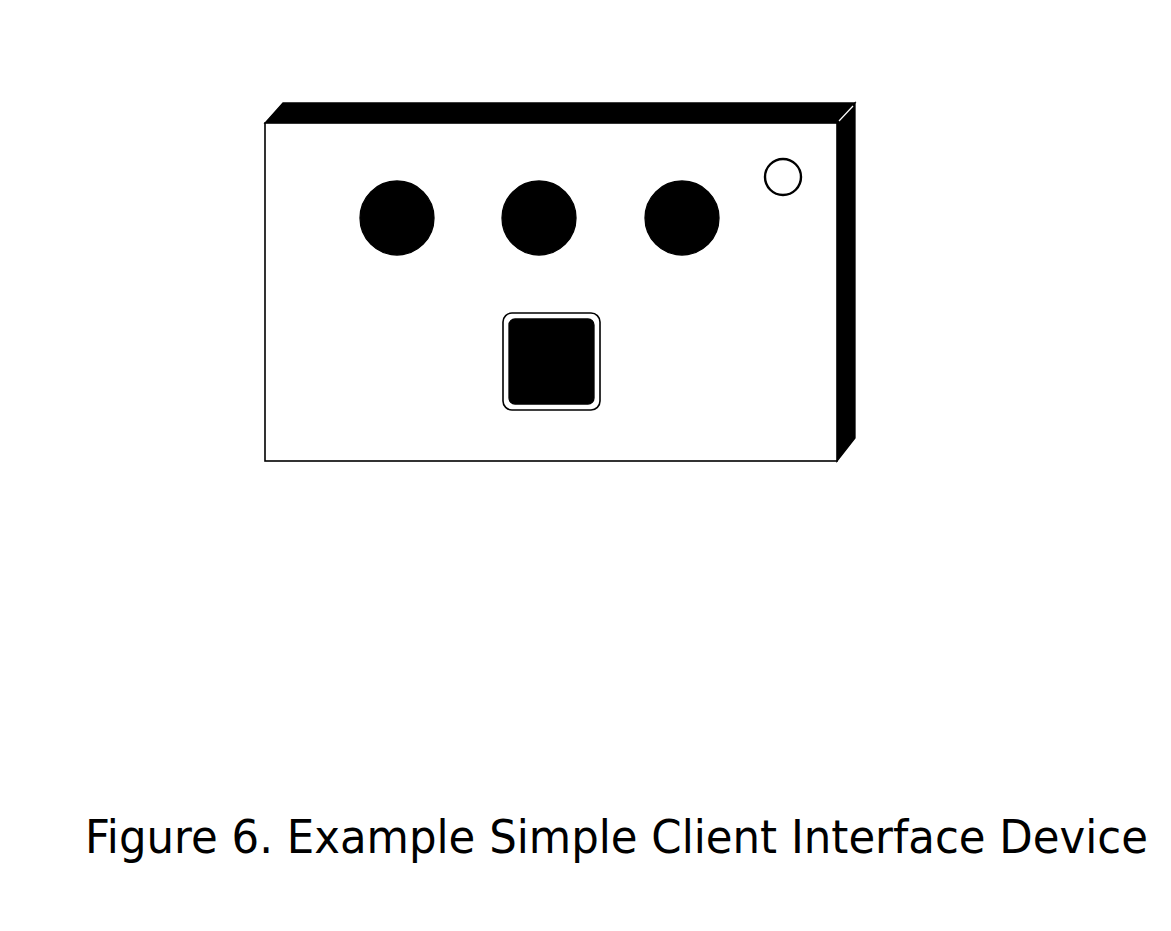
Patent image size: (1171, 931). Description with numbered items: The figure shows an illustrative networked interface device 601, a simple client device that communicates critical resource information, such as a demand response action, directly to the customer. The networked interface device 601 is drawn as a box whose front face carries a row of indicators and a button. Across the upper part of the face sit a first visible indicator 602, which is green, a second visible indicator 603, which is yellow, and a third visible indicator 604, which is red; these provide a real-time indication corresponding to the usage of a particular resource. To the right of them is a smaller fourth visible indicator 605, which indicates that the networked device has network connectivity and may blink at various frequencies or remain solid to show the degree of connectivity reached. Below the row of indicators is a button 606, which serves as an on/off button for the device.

The networked interface device 601 is at (257, 269).
The first visible indicator 602 is at (374, 191).
The second visible indicator 603 is at (529, 183).
The third visible indicator 604 is at (661, 184).
The fourth visible indicator 605 is at (783, 159).
The button 606 is at (548, 411).